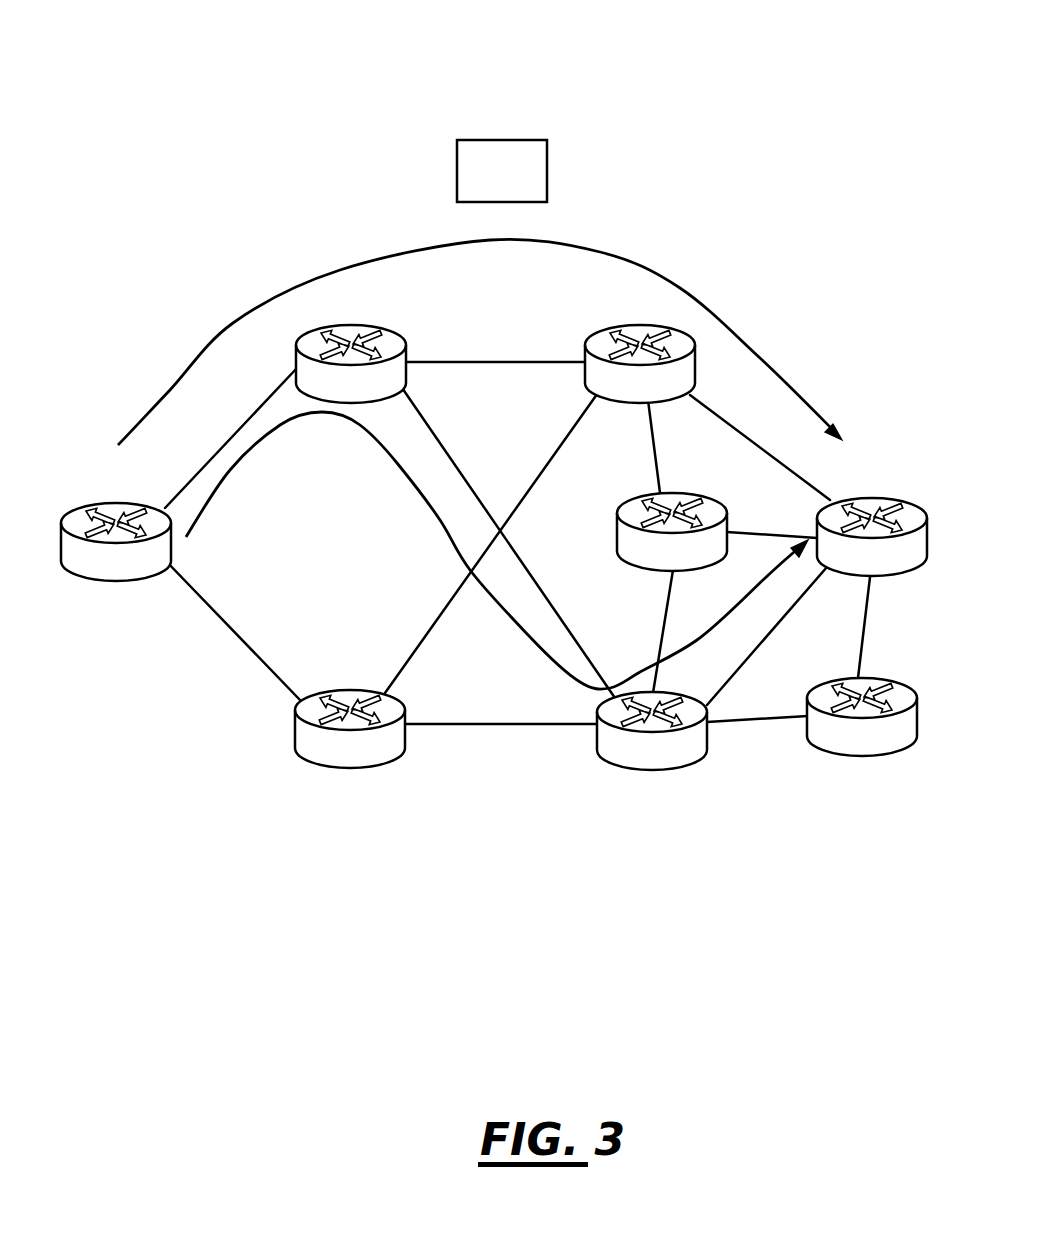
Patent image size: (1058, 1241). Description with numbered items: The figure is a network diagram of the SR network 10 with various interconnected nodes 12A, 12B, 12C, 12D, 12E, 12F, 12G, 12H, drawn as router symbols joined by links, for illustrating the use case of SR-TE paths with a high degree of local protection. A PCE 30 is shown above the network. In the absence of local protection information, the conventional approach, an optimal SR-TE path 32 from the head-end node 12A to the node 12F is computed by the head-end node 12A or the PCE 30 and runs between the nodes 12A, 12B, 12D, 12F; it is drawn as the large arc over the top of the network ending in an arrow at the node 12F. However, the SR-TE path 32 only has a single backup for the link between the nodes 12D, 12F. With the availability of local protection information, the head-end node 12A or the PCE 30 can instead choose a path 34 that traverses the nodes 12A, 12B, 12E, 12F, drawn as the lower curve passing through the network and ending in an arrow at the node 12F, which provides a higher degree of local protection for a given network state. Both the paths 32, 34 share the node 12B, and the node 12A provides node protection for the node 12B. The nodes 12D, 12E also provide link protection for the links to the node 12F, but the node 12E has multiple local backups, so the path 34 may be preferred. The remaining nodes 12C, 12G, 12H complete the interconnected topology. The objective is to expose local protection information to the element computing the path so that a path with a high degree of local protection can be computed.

The SR network 10 is at (508, 65).
The node 12A is at (100, 581).
The node 12B is at (370, 327).
The node 12C is at (305, 752).
The node 12D is at (615, 327).
The node 12E is at (612, 758).
The node 12F is at (873, 498).
The node 12G is at (620, 522).
The node 12H is at (847, 753).
The PCE 30 is at (547, 170).
The SR-TE path 32 is at (695, 290).
The path 34 is at (397, 463).